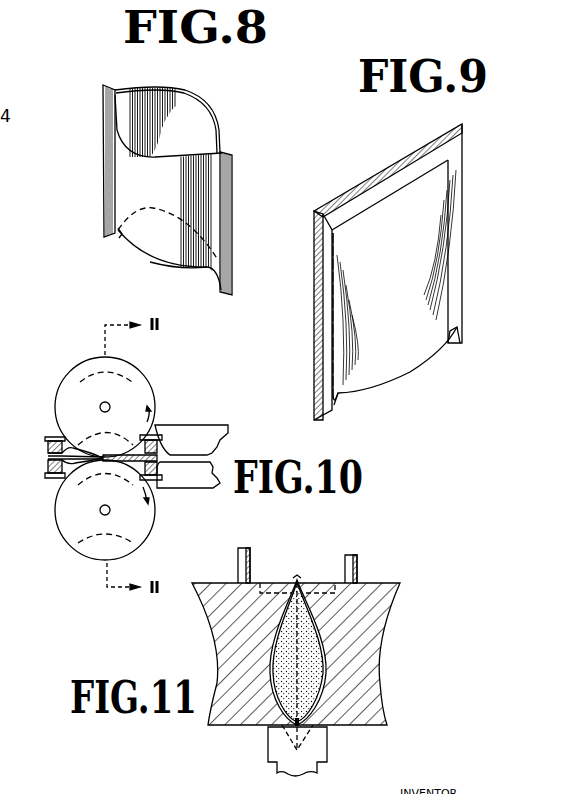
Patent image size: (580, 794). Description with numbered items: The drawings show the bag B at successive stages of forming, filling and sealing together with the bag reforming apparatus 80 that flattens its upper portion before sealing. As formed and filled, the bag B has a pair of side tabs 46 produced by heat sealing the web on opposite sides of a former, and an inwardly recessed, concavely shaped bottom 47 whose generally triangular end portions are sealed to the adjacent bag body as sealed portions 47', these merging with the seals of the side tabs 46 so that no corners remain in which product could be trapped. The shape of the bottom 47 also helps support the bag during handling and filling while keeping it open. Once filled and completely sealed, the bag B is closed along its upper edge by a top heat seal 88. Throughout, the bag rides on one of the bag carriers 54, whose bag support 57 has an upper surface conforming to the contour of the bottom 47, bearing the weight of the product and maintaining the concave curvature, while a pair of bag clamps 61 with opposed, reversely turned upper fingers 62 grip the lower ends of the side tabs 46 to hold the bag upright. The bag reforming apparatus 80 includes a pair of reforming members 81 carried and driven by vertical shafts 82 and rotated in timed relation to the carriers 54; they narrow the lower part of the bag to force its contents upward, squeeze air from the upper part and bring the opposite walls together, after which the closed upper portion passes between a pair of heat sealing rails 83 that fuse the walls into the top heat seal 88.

In FIG. 8, the side tabs 46 is at (108, 157).
In FIG. 9, the side tabs 46 is at (318, 297).
In FIG. 8, the bottom 47 is at (178, 283).
In FIG. 8, the sealed portions 47' is at (109, 257).
In FIG. 9, the sealed portions 47' is at (363, 413).
In FIG. 8, the bag B is at (223, 122).
In FIG. 9, the bag B is at (406, 371).
In FIG. 10, the bag B is at (97, 467).
In FIG. 11, the bag B is at (319, 647).
In FIG. 9, the top heat seal 88 is at (368, 195).
In FIG. 10, the reforming members 81 is at (143, 382).
In FIG. 11, the reforming members 81 is at (217, 632).
In FIG. 10, the vertical shafts 82 is at (100, 407).
In FIG. 11, the vertical shafts 82 is at (252, 565).
In FIG. 10, the heat sealing rails 83 is at (202, 433).
In FIG. 10, the bag clamps 61 is at (50, 437).
In FIG. 10, the upper fingers 62 is at (48, 462).
In FIG. 11, the bag reforming apparatus 80 is at (388, 677).
In FIG. 11, the bag support 57 is at (327, 740).
In FIG. 11, the bag carriers 54 is at (276, 766).